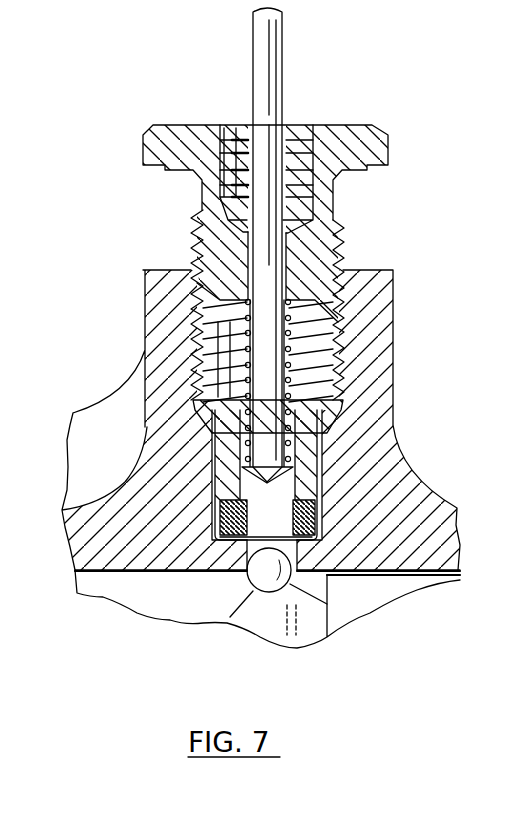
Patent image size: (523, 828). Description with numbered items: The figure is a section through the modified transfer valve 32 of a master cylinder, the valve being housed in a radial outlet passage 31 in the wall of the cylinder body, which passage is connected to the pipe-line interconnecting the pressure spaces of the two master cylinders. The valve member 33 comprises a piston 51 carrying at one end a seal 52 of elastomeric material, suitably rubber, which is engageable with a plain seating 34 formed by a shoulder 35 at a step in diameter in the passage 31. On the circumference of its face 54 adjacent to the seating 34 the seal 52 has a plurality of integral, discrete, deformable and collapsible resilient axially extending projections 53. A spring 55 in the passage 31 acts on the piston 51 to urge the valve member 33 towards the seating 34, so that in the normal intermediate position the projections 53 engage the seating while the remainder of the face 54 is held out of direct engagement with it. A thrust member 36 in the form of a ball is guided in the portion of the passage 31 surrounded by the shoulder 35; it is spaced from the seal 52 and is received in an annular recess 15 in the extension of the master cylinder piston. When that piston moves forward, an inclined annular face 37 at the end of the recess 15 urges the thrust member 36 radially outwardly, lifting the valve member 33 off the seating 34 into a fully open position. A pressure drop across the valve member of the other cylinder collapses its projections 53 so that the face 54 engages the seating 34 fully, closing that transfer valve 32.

The annular recess 15 is at (253, 590).
The radial outlet passage 31 is at (343, 377).
The transfer valve 32 is at (229, 488).
The valve member 33 is at (311, 450).
The seating 34 is at (307, 547).
The shoulder 35 is at (247, 557).
The thrust member 36 is at (263, 582).
The inclined annular face 37 is at (307, 590).
The piston 51 is at (323, 482).
The seal 52 is at (215, 510).
The resilient axially extending projections 53 is at (320, 542).
The face 54 is at (218, 556).
The spring 55 is at (200, 372).